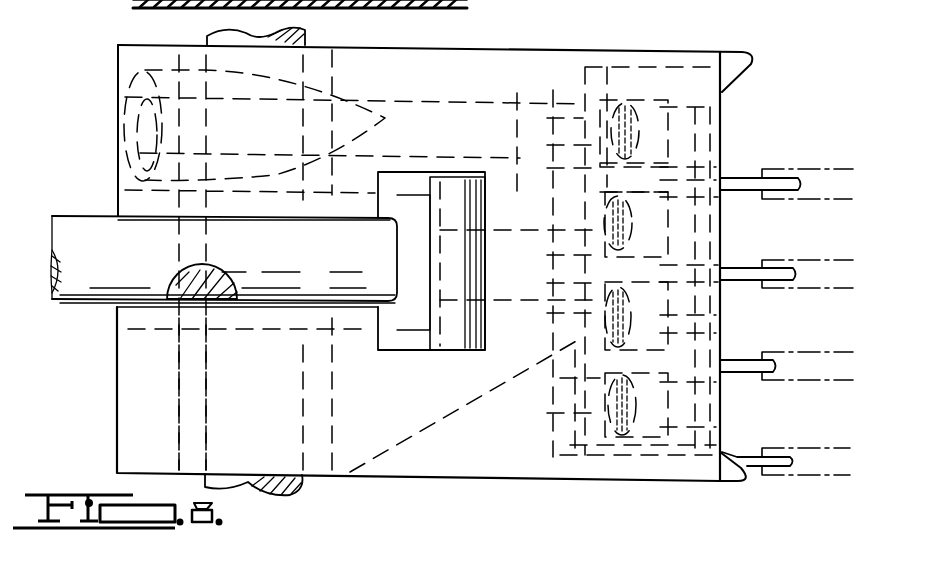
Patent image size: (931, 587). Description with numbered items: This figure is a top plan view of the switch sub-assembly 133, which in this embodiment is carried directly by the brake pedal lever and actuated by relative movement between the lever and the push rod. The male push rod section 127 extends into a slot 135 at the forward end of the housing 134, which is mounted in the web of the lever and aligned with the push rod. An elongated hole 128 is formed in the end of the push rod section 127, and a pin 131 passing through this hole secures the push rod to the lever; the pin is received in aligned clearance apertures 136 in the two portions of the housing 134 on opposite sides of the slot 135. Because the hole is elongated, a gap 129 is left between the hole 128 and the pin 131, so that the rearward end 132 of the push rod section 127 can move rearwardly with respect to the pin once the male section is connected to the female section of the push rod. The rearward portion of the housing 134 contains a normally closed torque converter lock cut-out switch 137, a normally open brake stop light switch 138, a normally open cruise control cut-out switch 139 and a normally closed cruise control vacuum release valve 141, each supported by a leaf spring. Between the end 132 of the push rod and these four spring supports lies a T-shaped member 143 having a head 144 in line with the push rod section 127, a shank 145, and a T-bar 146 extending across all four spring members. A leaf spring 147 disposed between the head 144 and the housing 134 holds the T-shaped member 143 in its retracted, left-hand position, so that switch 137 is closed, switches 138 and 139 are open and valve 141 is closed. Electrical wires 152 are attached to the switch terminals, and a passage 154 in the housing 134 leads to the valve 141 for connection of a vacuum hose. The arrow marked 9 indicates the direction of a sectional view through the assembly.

The male push rod section 127 is at (84, 222).
The elongated hole 128 is at (186, 244).
The gap 129 is at (178, 289).
The pin 131 is at (213, 373).
The rearward end of push rod section 132 is at (400, 266).
The switch sub-assembly 133 is at (557, 41).
The housing 134 is at (491, 54).
The slot 135 is at (150, 217).
The clearance apertures 136 is at (190, 50).
The torque converter lock cut-out switch 137 is at (627, 485).
The brake stop light switch 138 is at (720, 318).
The cruise control cut-out switch 139 is at (720, 223).
The cruise control vacuum release valve 141 is at (668, 78).
The T-shaped member 143 is at (521, 228).
The head 144 is at (408, 203).
The shank 145 is at (508, 280).
The T-bar 146 is at (560, 328).
The leaf spring 147 is at (443, 188).
The electrical wires 152 is at (829, 168).
The passage 154 is at (140, 102).
The section view indicator 9 is at (816, 233).